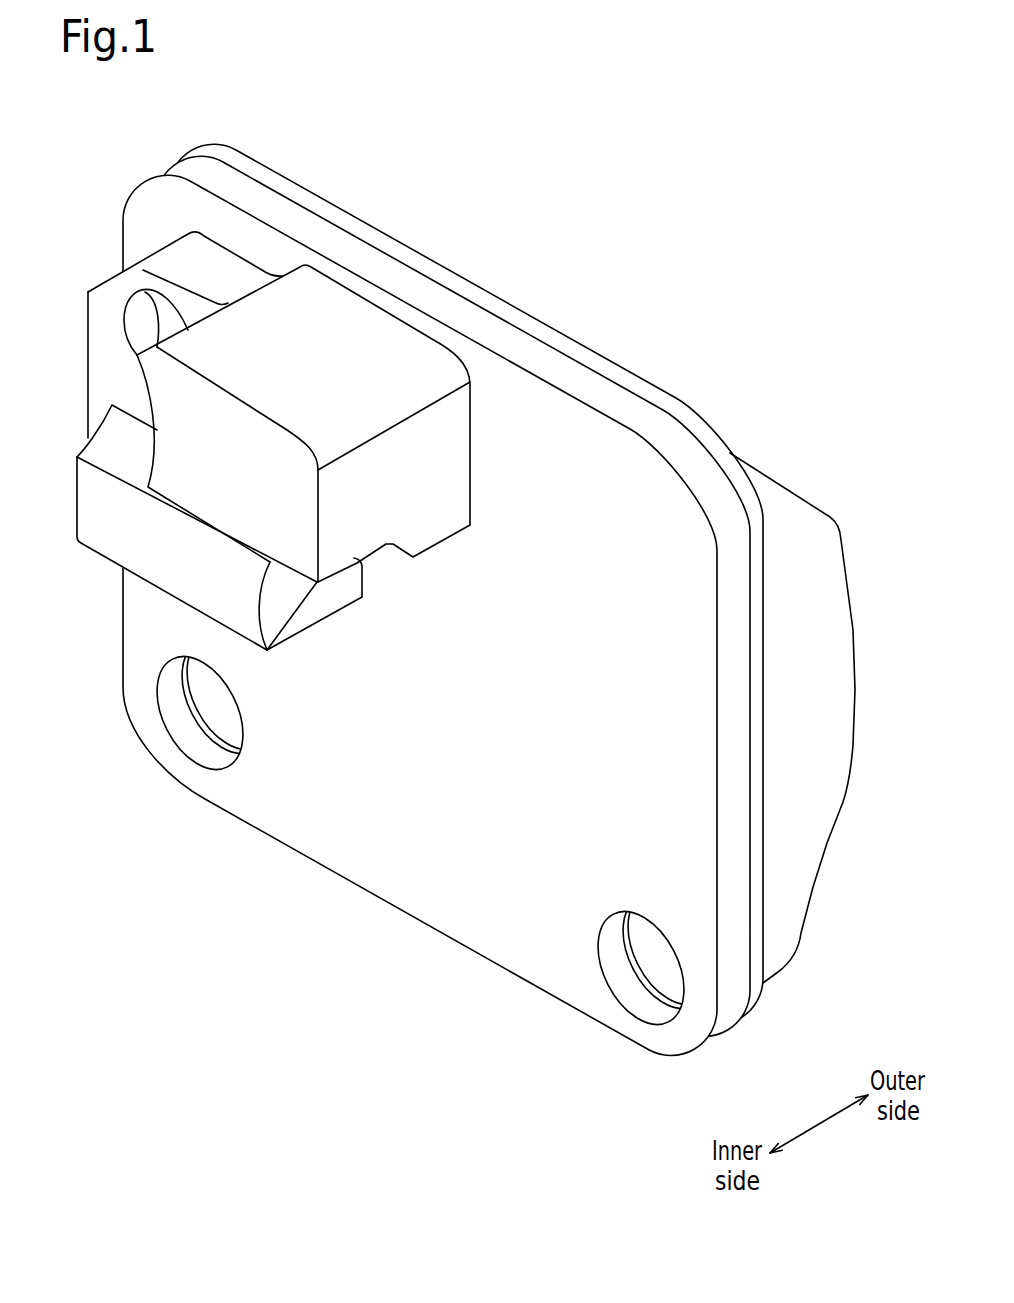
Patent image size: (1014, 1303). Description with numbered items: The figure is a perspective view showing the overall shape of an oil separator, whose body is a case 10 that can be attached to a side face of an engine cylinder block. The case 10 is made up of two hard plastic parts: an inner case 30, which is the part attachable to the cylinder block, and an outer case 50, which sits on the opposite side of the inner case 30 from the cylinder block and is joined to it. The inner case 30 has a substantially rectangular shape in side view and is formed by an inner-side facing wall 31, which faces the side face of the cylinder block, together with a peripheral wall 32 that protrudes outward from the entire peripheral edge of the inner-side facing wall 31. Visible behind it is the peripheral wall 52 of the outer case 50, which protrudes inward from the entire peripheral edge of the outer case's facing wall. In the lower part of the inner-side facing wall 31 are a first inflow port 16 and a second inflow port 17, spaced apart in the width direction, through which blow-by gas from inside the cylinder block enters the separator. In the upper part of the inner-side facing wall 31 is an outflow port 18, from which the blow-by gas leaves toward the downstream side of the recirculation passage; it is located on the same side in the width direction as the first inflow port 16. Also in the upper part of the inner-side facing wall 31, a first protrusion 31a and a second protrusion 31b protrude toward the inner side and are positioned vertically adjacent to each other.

The case 10 is at (816, 1005).
The first inflow port 16 is at (230, 712).
The second inflow port 17 is at (640, 935).
The outflow port 18 is at (122, 310).
The inner case 30 is at (448, 612).
The inner-side facing wall 31 is at (445, 917).
The first protrusion 31a is at (160, 383).
The second protrusion 31b is at (85, 503).
The peripheral wall 32 is at (737, 900).
The outer case 50 is at (526, 591).
The peripheral wall 52 is at (757, 863).